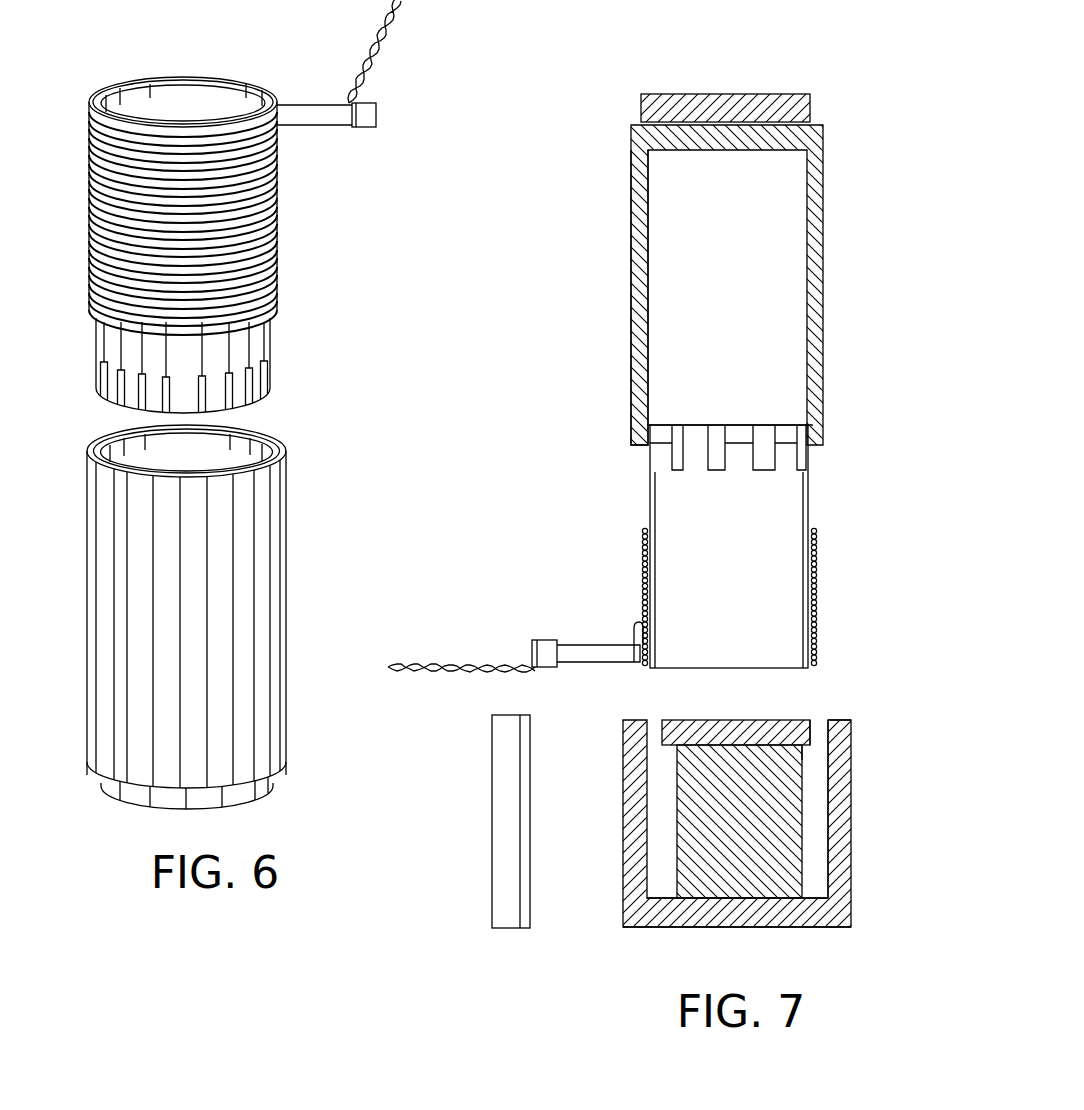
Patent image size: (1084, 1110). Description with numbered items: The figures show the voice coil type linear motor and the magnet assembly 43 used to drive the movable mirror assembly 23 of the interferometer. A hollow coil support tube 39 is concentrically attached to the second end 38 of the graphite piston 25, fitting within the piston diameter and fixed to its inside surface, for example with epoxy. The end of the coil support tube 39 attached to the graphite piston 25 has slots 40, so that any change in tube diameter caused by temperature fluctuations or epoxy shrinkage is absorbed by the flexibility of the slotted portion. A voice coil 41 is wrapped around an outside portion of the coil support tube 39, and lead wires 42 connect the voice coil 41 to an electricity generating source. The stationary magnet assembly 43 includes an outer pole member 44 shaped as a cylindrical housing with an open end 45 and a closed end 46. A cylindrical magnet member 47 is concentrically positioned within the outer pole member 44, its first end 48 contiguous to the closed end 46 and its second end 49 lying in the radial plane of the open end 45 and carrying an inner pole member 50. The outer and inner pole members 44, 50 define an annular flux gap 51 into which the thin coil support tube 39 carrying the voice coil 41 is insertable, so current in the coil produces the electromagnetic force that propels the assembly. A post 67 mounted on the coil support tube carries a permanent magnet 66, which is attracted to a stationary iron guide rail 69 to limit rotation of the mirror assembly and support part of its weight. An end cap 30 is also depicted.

In FIG. 6, the mirror assembly 23 is at (88, 576).
In FIG. 7, the mirror assembly 23 is at (826, 224).
In FIG. 6, the graphite piston 25 is at (246, 593).
In FIG. 7, the graphite piston 25 is at (629, 262).
In FIG. 6, the end cap 30 is at (100, 795).
In FIG. 7, the end cap 30 is at (729, 90).
In FIG. 6, the second end 38 is at (262, 427).
In FIG. 6, the coil support tube 39 is at (96, 336).
In FIG. 7, the coil support tube 39 is at (648, 486).
In FIG. 6, the slots 40 is at (116, 378).
In FIG. 7, the slots 40 is at (670, 444).
In FIG. 6, the voice coil 41 is at (90, 202).
In FIG. 7, the voice coil 41 is at (640, 554).
In FIG. 7, the lead wires 42 is at (416, 660).
In FIG. 7, the magnet assembly 43 is at (852, 812).
In FIG. 7, the outer pole member 44 is at (852, 880).
In FIG. 7, the open end 45 is at (842, 713).
In FIG. 7, the closed end 46 is at (795, 930).
In FIG. 7, the magnet member 47 is at (736, 822).
In FIG. 7, the first end 48 is at (704, 912).
In FIG. 7, the second end 49 is at (712, 718).
In FIG. 7, the inner pole member 50 is at (814, 749).
In FIG. 7, the annular flux gap 51 is at (819, 713).
In FIG. 7, the permanent magnet 66 is at (540, 641).
In FIG. 6, the post 67 is at (330, 134).
In FIG. 7, the post 67 is at (592, 643).
In FIG. 7, the guide rail 69 is at (490, 800).